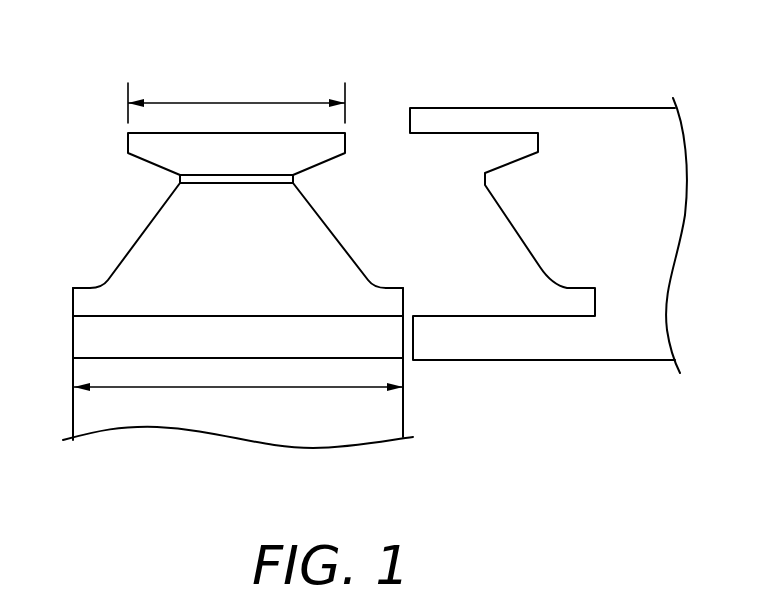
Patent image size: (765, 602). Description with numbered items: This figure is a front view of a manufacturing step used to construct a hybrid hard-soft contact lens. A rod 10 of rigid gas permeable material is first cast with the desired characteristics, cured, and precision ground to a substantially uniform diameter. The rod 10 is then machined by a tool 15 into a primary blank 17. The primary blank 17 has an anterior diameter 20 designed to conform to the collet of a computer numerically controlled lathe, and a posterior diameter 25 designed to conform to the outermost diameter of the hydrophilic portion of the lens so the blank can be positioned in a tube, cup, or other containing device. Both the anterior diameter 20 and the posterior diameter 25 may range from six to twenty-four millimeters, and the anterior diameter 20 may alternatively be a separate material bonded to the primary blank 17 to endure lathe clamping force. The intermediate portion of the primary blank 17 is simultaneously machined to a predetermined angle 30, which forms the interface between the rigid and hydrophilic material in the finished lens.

The rod 10 is at (241, 425).
The tool 15 is at (614, 221).
The primary blank 17 is at (235, 231).
The anterior diameter 20 is at (238, 103).
The posterior diameter 25 is at (327, 389).
The predetermined angle 30 is at (142, 237).